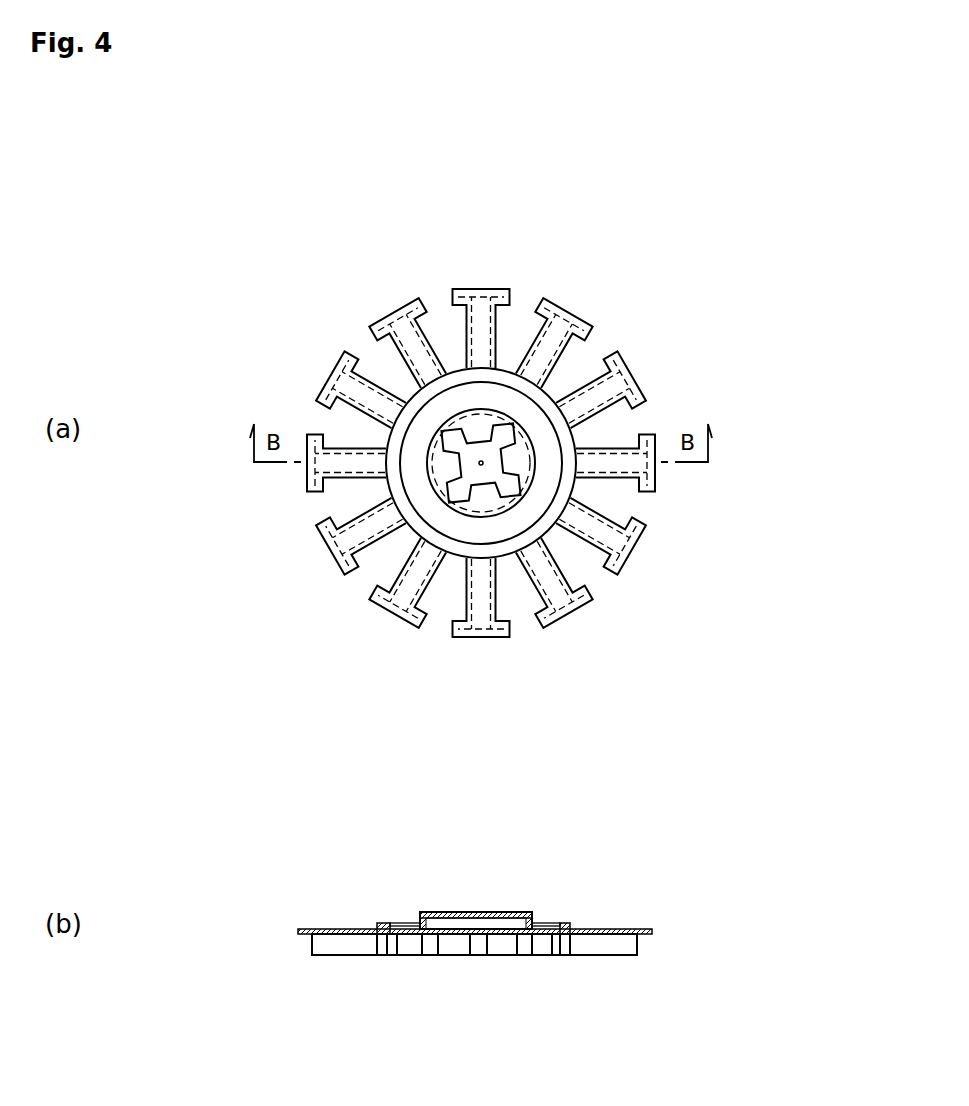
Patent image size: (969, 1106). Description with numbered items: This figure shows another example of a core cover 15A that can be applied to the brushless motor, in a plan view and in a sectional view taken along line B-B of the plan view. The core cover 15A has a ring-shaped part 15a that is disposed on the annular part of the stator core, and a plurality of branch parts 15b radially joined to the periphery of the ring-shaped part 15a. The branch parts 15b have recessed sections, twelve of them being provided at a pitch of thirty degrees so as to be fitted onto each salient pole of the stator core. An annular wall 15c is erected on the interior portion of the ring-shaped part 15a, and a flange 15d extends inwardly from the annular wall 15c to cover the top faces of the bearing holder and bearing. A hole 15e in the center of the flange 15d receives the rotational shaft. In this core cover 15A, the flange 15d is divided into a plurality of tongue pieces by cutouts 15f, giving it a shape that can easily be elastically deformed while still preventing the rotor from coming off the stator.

The core cover 15A is at (597, 302).
The ring-shaped part 15a is at (423, 417).
The branch parts 15b is at (587, 400).
The annular wall 15c is at (527, 493).
The flange 15d is at (483, 490).
The hole 15e is at (480, 465).
The cutouts 15f is at (460, 443).